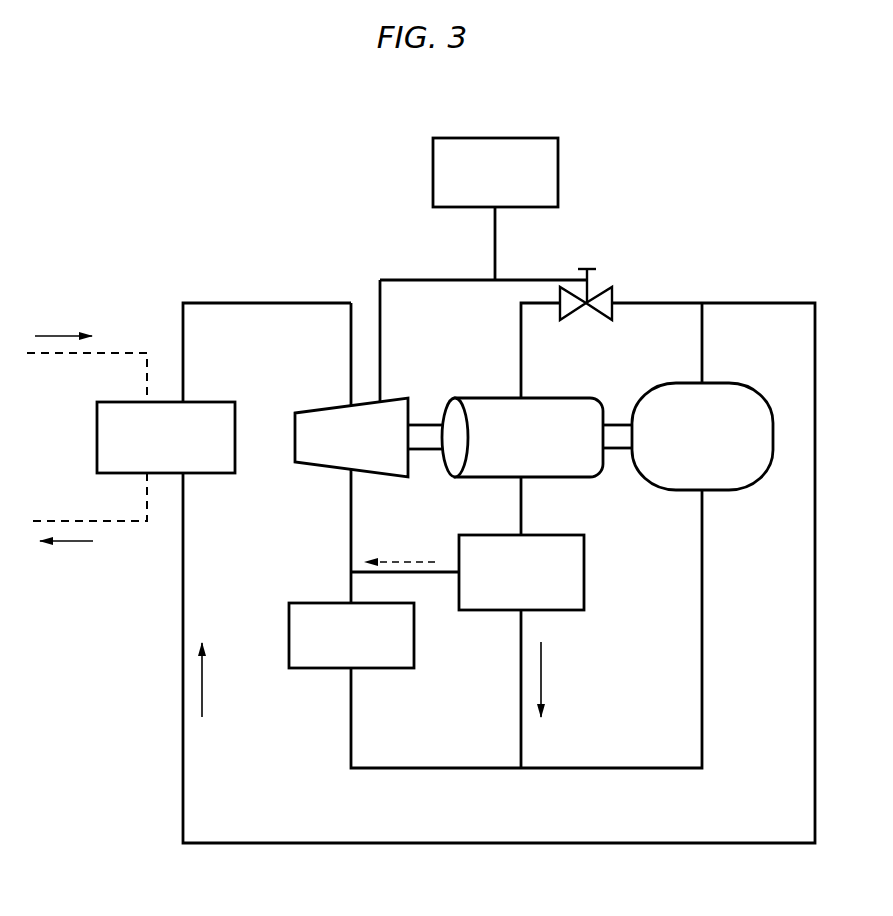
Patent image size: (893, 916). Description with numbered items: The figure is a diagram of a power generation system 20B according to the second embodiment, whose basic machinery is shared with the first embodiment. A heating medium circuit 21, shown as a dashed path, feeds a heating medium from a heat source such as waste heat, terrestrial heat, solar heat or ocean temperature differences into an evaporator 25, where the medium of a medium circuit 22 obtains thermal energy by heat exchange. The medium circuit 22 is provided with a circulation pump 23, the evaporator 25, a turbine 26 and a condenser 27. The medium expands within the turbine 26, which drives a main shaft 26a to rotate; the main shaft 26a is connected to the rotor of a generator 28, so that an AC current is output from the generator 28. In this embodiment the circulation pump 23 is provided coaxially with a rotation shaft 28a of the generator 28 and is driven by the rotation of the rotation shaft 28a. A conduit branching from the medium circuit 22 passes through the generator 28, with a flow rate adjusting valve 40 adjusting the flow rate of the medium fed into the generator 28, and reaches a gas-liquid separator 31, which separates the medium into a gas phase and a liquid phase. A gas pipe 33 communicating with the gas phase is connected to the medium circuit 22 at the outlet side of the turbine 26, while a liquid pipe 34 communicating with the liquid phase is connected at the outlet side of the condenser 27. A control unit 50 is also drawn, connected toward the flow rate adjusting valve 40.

The power generation system 20B is at (272, 262).
The heating medium circuit 21 is at (123, 350).
The medium circuit 22 is at (218, 302).
The circulation pump 23 is at (746, 481).
The evaporator 25 is at (210, 402).
The turbine 26 is at (330, 408).
The main shaft 26a is at (433, 428).
The condenser 27 is at (313, 603).
The generator 28 is at (482, 398).
The rotation shaft 28a is at (613, 450).
The gas-liquid separator 31 is at (547, 612).
The gas pipe 33 is at (447, 570).
The liquid pipe 34 is at (521, 715).
The flow rate adjusting valve 40 is at (607, 287).
The control unit 50 is at (558, 170).